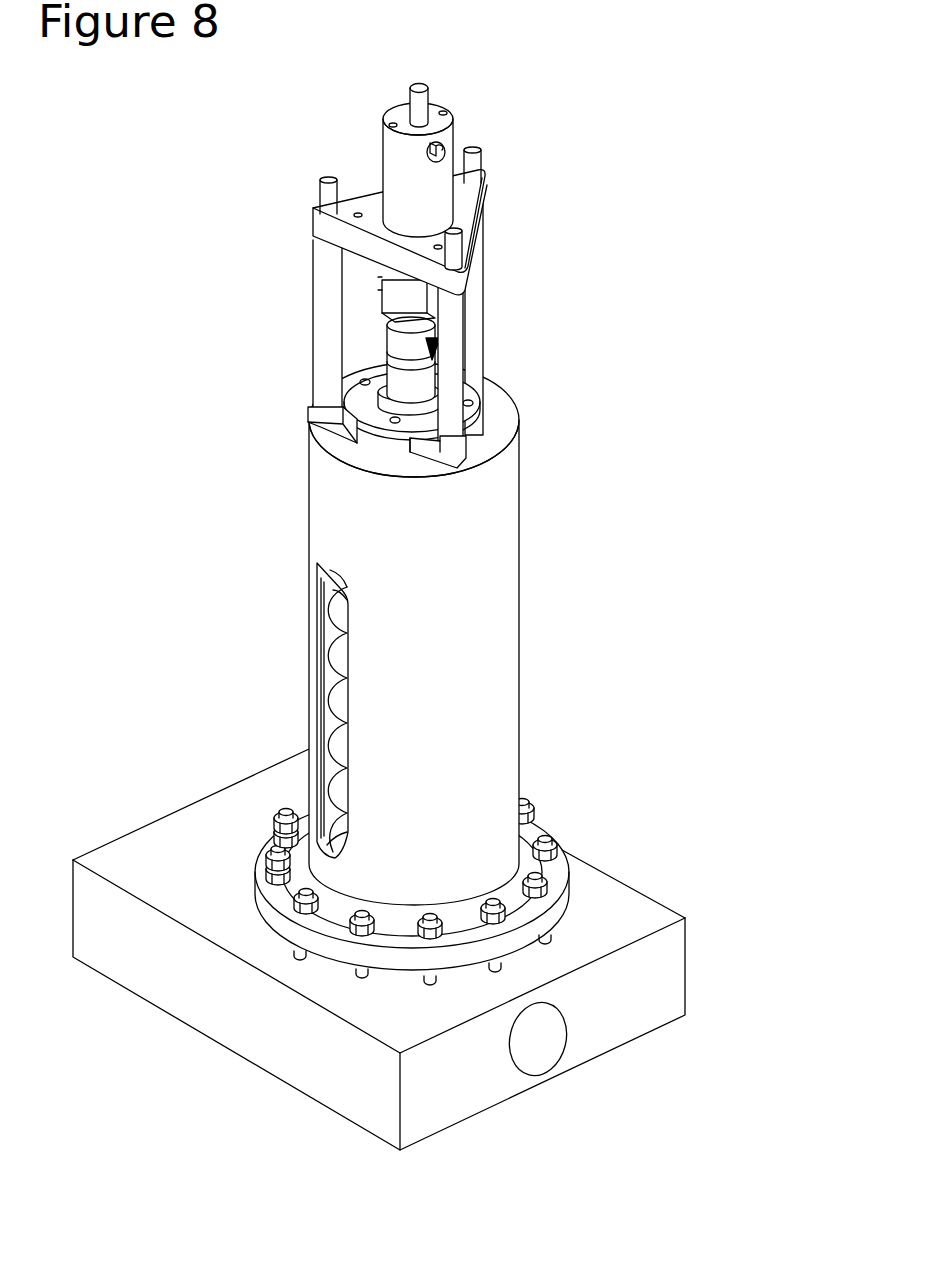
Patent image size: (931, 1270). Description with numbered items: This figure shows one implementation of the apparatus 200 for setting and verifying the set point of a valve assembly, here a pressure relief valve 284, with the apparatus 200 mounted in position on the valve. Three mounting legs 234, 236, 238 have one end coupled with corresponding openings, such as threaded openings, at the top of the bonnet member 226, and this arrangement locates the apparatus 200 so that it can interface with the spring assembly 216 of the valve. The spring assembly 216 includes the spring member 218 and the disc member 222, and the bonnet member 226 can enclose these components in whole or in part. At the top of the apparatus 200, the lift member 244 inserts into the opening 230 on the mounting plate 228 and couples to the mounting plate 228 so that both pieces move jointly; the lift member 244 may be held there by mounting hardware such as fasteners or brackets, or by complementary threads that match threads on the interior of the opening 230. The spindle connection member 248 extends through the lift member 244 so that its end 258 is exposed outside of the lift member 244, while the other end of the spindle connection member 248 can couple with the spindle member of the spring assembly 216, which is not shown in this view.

The apparatus 200 is at (429, 599).
The spring assembly 216 is at (243, 653).
The spring member 218 is at (253, 815).
The disc member 222 is at (302, 805).
The bonnet member 226 is at (520, 523).
The mounting plate 228 is at (470, 203).
The opening 230 is at (378, 213).
The mounting leg 234 is at (452, 367).
The mounting leg 236 is at (328, 318).
The mounting leg 238 is at (477, 317).
The lift member 244 is at (438, 142).
The spindle connection member 248 is at (431, 103).
The end 258 is at (409, 101).
The pressure relief valve 284 is at (462, 476).